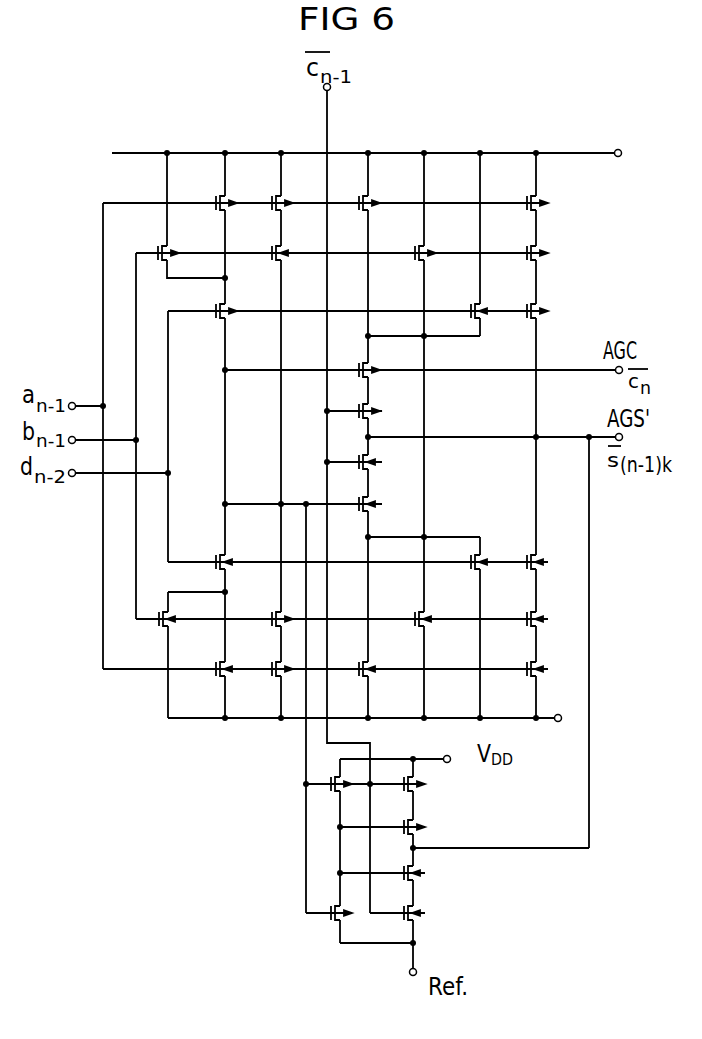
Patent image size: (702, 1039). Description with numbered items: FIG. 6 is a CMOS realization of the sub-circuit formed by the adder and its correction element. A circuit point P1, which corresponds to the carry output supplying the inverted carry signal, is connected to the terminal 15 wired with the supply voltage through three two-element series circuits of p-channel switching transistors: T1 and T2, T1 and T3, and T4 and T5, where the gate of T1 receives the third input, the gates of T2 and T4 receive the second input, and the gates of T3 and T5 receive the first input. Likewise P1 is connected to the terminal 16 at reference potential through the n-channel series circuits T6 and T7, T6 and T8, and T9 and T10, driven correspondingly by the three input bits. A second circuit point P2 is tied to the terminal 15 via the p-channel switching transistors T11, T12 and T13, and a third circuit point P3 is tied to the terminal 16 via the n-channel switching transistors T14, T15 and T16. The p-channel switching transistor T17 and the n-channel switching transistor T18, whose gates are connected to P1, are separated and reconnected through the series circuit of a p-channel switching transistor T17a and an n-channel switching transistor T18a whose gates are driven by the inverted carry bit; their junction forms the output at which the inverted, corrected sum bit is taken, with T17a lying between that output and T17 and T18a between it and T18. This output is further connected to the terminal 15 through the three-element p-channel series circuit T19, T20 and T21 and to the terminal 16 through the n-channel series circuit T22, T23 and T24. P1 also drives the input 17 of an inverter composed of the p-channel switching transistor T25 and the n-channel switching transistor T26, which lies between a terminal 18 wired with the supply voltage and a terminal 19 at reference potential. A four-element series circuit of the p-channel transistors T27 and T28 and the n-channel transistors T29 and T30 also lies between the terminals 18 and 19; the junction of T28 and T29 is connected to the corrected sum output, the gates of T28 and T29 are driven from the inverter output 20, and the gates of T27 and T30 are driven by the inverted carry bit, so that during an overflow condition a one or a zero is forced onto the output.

The terminal 15 is at (376, 154).
The terminal 16 is at (374, 718).
The input of the inverter 17 is at (296, 786).
The terminal 18 is at (457, 760).
The terminal 19 is at (414, 988).
The output of the inverter 20 is at (369, 827).
The circuit point P1 is at (289, 506).
The circuit point P2 is at (410, 338).
The circuit point P3 is at (409, 539).
The p-channel switching transistor T1 is at (213, 300).
The p-channel switching transistor T2 is at (154, 241).
The p-channel switching transistor T3 is at (213, 190).
The p-channel switching transistor T4 is at (266, 241).
The p-channel switching transistor T5 is at (269, 190).
The n-channel field effect transistor T6 is at (232, 551).
The n-channel field effect transistor T7 is at (157, 606).
The n-channel field effect transistor T8 is at (210, 657).
The n-channel field effect transistor T9 is at (270, 606).
The n-channel field effect transistor T10 is at (266, 657).
The p-channel switching transistor T11 is at (492, 299).
The p-channel switching transistor T12 is at (436, 241).
The p-channel switching transistor T13 is at (379, 190).
The n-channel switching transistor T14 is at (495, 550).
The n-channel switching transistor T15 is at (436, 605).
The n-channel switching transistor T16 is at (380, 656).
The p-channel switching transistor T17 is at (380, 360).
The p-channel switching transistor T17a is at (385, 400).
The n-channel switching transistor T18 is at (386, 503).
The n-channel switching transistor T18a is at (392, 461).
The p-channel switching transistor T19 is at (551, 299).
The p-channel switching transistor T20 is at (551, 241).
The p-channel switching transistor T21 is at (551, 190).
The n-channel switching transistor T22 is at (551, 547).
The n-channel switching transistor T23 is at (551, 605).
The n-channel switching transistor T24 is at (551, 656).
The p-channel switching transistor T25 is at (331, 769).
The n-channel switching transistor T26 is at (323, 928).
The p-channel transistor T27 is at (430, 786).
The p-channel transistor T28 is at (430, 827).
The n-channel transistor T29 is at (430, 874).
The n-channel transistor T30 is at (431, 914).